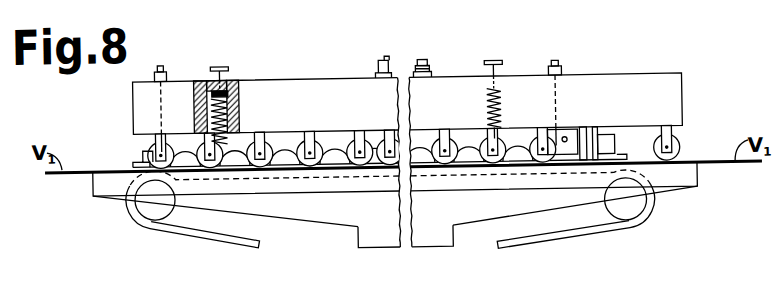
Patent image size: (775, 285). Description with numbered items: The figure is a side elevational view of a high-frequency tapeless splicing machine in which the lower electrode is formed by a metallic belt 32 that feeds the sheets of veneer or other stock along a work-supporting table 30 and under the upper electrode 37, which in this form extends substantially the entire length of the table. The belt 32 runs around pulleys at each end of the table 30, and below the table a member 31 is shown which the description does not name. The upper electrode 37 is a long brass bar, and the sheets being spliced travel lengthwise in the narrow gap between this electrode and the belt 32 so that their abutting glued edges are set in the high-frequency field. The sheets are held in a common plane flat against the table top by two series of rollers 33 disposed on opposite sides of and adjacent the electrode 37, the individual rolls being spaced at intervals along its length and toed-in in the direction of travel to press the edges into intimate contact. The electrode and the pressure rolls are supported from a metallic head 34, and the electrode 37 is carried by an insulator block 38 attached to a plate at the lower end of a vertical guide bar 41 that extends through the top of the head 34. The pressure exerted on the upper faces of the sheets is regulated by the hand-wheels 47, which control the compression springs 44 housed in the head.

The work-supporting table 30 is at (697, 187).
The housing box 31 is at (367, 238).
The metallic belt 32 is at (177, 229).
The rollers 33 is at (383, 145).
The metallic head 34 is at (642, 67).
The upper electrode 37 is at (135, 163).
The insulator block 38 is at (138, 139).
The vertical guide bar 41 is at (166, 60).
The compression springs 44 is at (231, 108).
The hand-wheels 47 is at (227, 64).